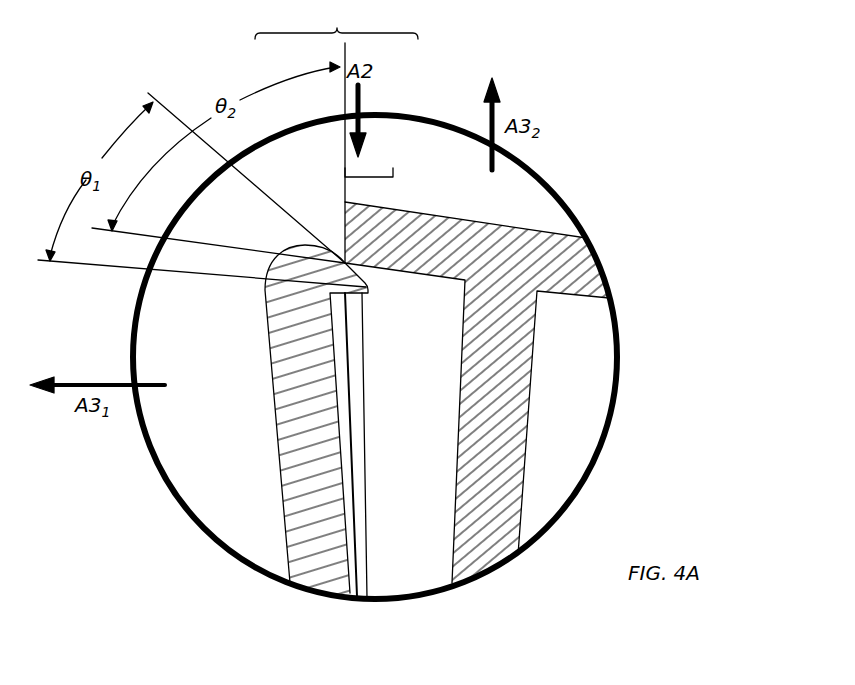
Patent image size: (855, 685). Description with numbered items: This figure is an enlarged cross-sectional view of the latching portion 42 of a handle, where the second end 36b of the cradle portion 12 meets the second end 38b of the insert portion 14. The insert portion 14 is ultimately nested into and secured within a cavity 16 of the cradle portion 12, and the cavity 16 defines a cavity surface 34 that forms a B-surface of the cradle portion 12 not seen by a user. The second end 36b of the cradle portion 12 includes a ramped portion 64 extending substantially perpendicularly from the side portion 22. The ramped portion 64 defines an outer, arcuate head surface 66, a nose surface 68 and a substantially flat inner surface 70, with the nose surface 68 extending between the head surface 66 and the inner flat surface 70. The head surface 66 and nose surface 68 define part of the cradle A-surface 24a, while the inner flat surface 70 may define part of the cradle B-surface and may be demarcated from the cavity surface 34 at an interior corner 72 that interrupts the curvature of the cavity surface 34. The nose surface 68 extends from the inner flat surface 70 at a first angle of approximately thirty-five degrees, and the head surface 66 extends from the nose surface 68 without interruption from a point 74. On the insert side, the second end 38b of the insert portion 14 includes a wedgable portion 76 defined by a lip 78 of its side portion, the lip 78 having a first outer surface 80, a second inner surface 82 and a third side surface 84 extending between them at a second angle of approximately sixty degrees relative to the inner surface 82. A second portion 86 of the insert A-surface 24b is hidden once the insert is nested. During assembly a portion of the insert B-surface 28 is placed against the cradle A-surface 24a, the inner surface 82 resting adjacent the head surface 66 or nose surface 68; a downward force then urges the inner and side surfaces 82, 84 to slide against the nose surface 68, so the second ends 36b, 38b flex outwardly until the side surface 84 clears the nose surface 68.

The cradle portion 12 is at (263, 470).
The insert portion 14 is at (521, 199).
The cavity 16 is at (411, 511).
The side portion 22 is at (312, 527).
The cradle A-surface 24a is at (285, 528).
The insert A-surface 24b is at (553, 232).
The insert B-surface 28 is at (447, 283).
The cavity surface 34 is at (350, 535).
The second end of the cradle portion 36b is at (263, 261).
The second end of the insert portion 38b is at (414, 204).
The latching portion 42 is at (336, 21).
The ramped portion 64 is at (333, 222).
The outer, arcuate head surface 66 is at (300, 250).
The nose surface 68 is at (370, 285).
The inner, flat surface 70 is at (357, 295).
The interior point or corner 72 is at (335, 297).
The point 74 is at (328, 224).
The wedgable portion 76 is at (365, 196).
The lip 78 is at (407, 198).
The first, outer surface 80 is at (435, 205).
The second, inner surface 82 is at (412, 282).
The third, side surface 84 is at (331, 230).
The second portion of the insert A-surface 86 is at (369, 159).